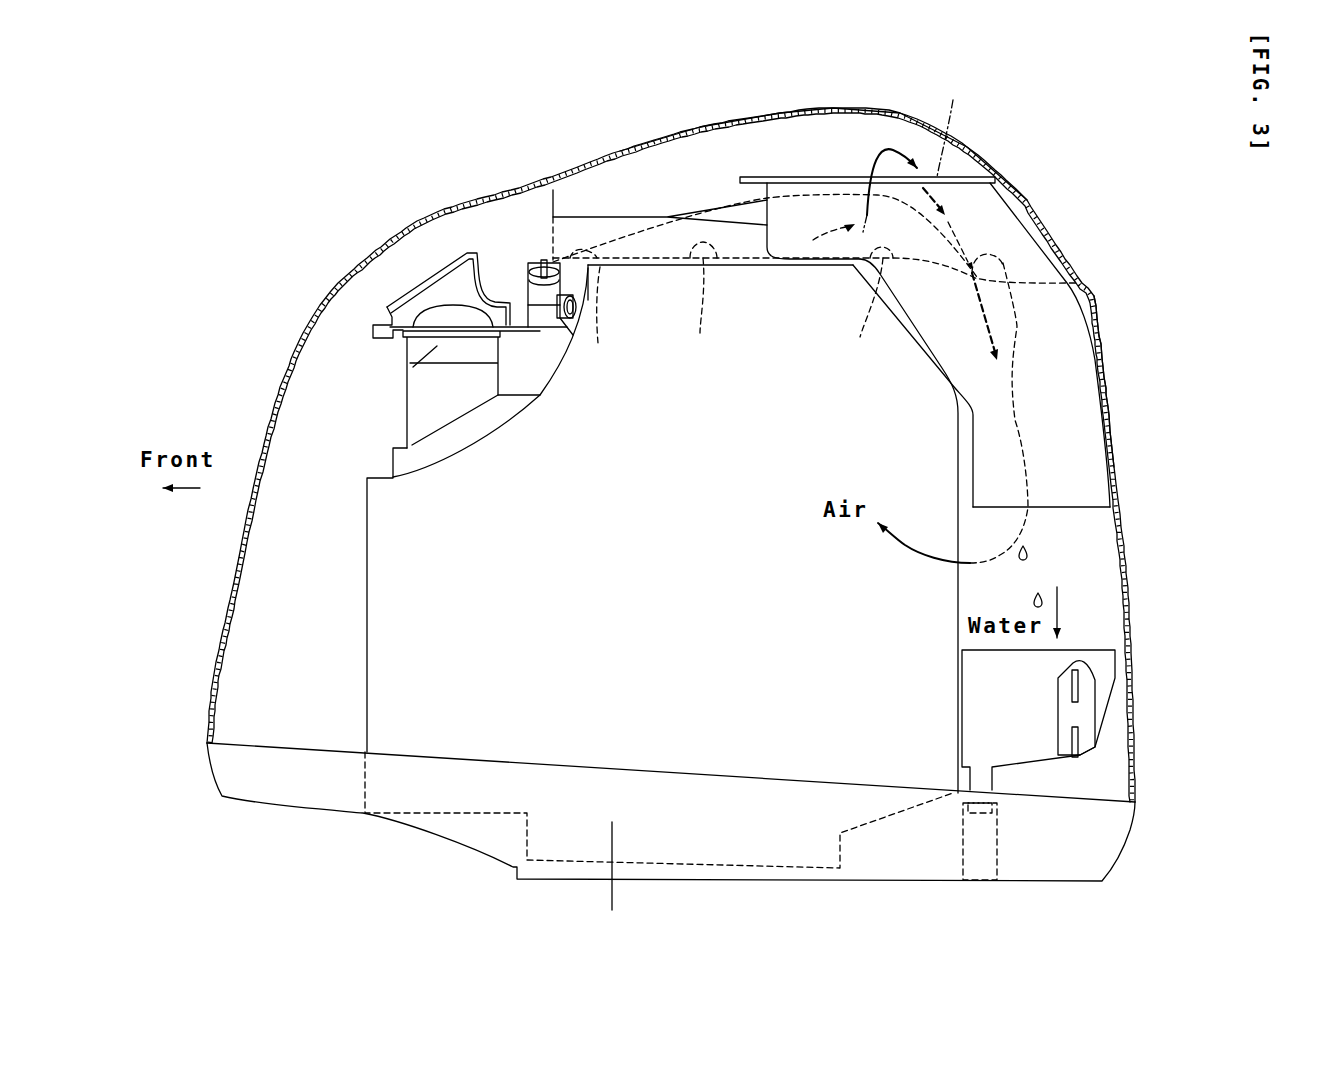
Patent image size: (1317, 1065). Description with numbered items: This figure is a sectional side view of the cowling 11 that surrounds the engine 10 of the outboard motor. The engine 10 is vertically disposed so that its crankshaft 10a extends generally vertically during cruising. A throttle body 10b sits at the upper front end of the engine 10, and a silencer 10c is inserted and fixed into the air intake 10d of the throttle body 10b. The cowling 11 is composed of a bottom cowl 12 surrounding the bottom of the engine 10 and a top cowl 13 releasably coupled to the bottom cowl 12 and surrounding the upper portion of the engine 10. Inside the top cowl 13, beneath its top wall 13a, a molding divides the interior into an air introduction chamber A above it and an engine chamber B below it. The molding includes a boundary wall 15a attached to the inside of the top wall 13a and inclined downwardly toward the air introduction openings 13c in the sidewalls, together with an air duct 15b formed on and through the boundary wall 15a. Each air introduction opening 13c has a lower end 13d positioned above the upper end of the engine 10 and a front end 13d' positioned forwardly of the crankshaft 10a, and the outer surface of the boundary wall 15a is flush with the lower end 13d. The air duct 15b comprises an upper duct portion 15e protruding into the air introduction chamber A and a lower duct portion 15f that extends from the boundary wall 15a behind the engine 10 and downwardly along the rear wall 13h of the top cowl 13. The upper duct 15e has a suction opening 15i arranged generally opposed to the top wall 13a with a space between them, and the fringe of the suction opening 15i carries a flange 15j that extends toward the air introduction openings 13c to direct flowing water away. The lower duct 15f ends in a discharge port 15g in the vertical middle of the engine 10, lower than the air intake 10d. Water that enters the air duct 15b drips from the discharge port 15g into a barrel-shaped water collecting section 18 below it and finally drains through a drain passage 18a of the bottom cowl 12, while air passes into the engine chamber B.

The engine 10 is at (362, 640).
The crankshaft 10a is at (612, 843).
The throttle body 10b is at (407, 400).
The silencer 10c is at (485, 262).
The air intake 10d is at (413, 367).
The cowling 11 is at (1140, 210).
The bottom cowl 12 is at (1130, 835).
The top cowl 13 is at (1108, 333).
The top wall 13a is at (813, 110).
The air introduction opening 13c is at (727, 207).
The lower end 13d is at (765, 277).
The front end 13d' is at (601, 312).
The rear wall 13h is at (1113, 377).
The boundary wall 15a is at (815, 305).
The air duct 15b is at (930, 352).
The upper duct portion 15e is at (767, 217).
The lower duct portion 15f is at (1102, 420).
The discharge port 15g is at (1087, 510).
The suction opening 15i is at (893, 175).
The flange 15j is at (813, 178).
The water collecting section 18 is at (1110, 705).
The drain passage 18a is at (997, 843).
The air introduction chamber A is at (950, 162).
The engine chamber B is at (1107, 595).